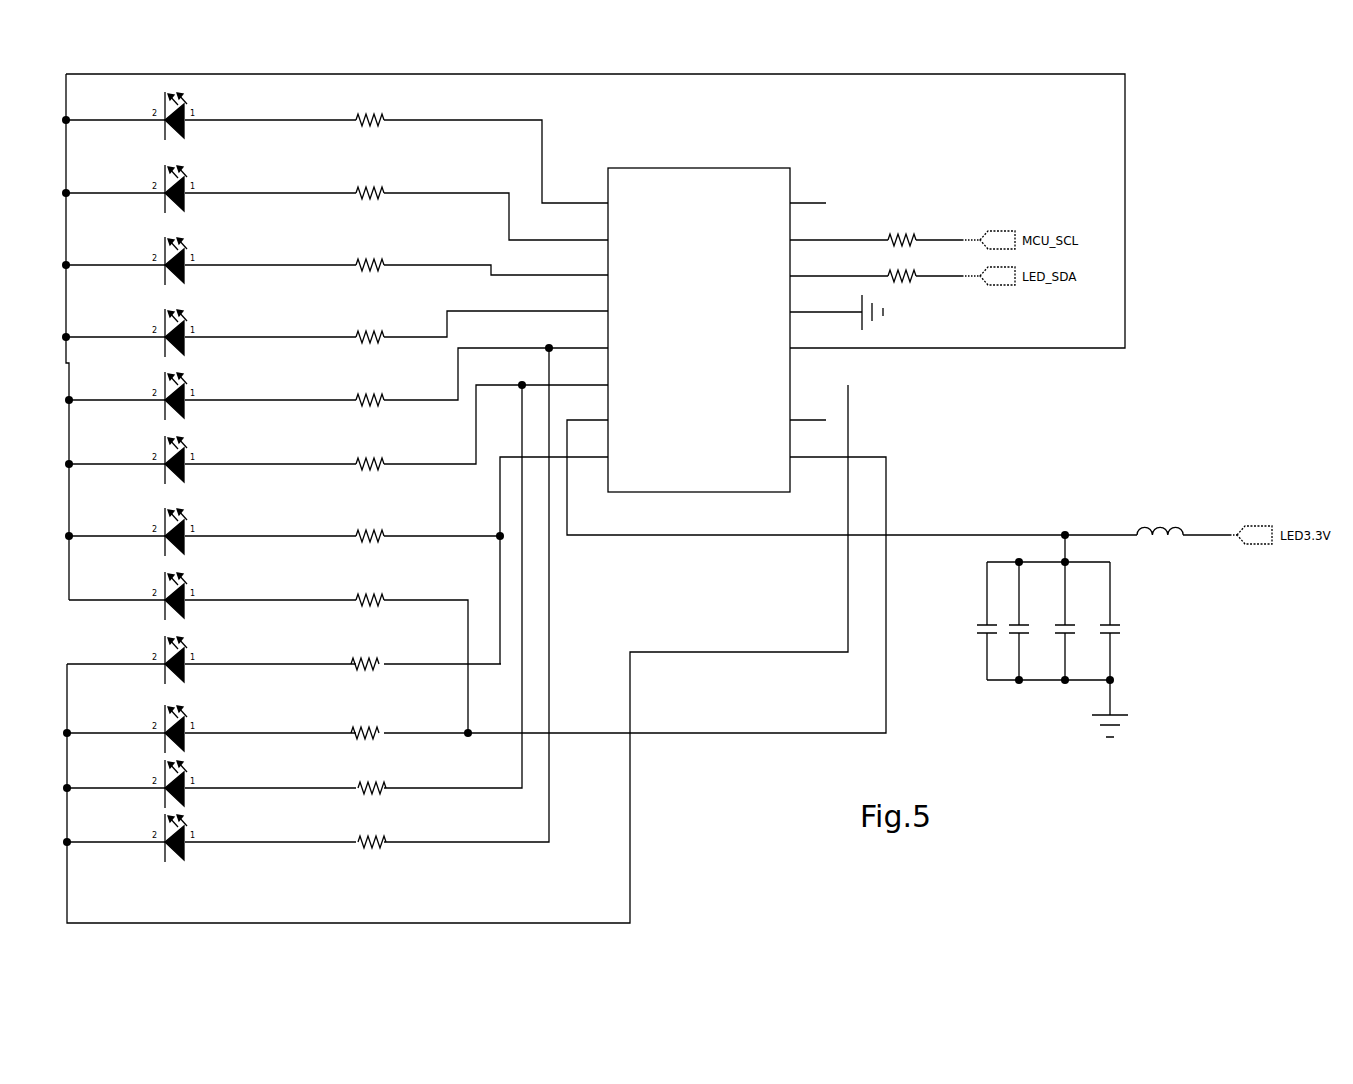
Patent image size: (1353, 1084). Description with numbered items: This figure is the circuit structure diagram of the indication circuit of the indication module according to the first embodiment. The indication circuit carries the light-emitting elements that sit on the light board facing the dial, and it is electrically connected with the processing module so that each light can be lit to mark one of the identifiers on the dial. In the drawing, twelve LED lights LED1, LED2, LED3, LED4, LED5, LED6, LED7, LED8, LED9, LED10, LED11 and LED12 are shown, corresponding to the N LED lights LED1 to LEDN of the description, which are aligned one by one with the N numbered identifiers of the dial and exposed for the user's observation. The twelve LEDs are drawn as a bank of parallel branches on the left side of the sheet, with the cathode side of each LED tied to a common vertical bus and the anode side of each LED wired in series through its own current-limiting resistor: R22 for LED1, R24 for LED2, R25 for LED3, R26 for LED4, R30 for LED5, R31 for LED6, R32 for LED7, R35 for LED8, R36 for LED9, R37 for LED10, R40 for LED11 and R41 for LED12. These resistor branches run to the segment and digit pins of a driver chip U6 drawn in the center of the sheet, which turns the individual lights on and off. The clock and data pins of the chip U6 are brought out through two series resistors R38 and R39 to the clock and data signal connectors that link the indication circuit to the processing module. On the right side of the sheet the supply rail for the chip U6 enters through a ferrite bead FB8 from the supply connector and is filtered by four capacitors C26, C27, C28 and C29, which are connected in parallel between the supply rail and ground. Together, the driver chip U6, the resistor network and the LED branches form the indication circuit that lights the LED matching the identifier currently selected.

The LED LED1 is at (163, 116).
The LED LED2 is at (163, 189).
The LED LED3 is at (163, 261).
The LED LED4 is at (163, 333).
The LED LED5 is at (163, 396).
The LED LED6 is at (163, 460).
The LED LED7 is at (163, 532).
The LED LED8 is at (163, 596).
The LED LED9 is at (163, 660).
The LED LED10 is at (161, 729).
The LED LED11 is at (163, 784).
The LED LED12 is at (163, 838).
The resistor R22 470R R22 is at (360, 110).
The resistor R24 470R R24 is at (360, 183).
The resistor R25 470R R25 is at (360, 255).
The resistor R26 470R R26 is at (360, 327).
The resistor R30 470R R30 is at (360, 390).
The resistor R31 470R R31 is at (360, 454).
The resistor R32 470R R32 is at (360, 526).
The resistor R35 470R R35 is at (360, 590).
The resistor R36 470R R36 is at (356, 654).
The resistor R37 470R R37 is at (356, 723).
The resistor R40 470R R40 is at (362, 778).
The resistor R41 470R R41 is at (362, 832).
The resistor R38 47R R38 is at (876, 232).
The resistor R39 47R R39 is at (876, 268).
The LED driver chip U6 AIP650E U6 is at (695, 308).
The ferrite bead FB8 is at (1156, 532).
The capacitor C26 is at (983, 621).
The capacitor C27 is at (1015, 621).
The capacitor C28 is at (1061, 621).
The capacitor C29 is at (1106, 621).